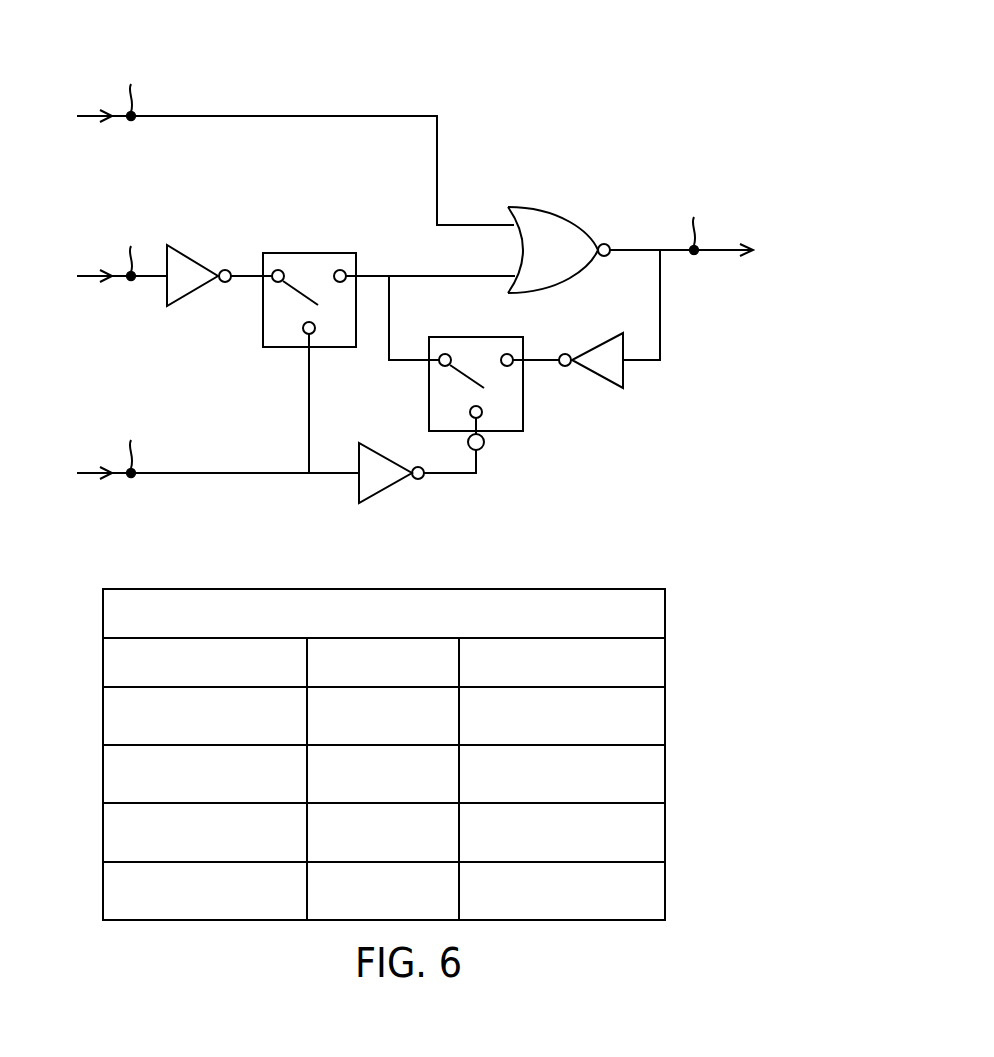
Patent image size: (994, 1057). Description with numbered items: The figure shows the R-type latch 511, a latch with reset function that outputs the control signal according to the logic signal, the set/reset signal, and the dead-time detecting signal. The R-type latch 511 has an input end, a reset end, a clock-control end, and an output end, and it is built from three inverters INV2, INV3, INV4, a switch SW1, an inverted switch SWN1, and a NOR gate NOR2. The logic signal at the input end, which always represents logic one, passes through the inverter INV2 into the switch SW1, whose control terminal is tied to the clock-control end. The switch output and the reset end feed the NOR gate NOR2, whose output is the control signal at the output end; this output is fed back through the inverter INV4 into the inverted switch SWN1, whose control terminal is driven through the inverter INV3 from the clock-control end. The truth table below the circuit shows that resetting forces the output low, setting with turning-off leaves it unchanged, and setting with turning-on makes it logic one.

The R-type latch 511 is at (637, 71).
The inverter INV2 is at (222, 222).
The inverter INV3 is at (380, 493).
The inverter INV4 is at (627, 372).
The switch SW1 is at (311, 252).
The inverted switch SWN1 is at (523, 407).
The NOR gate NOR2 is at (567, 208).